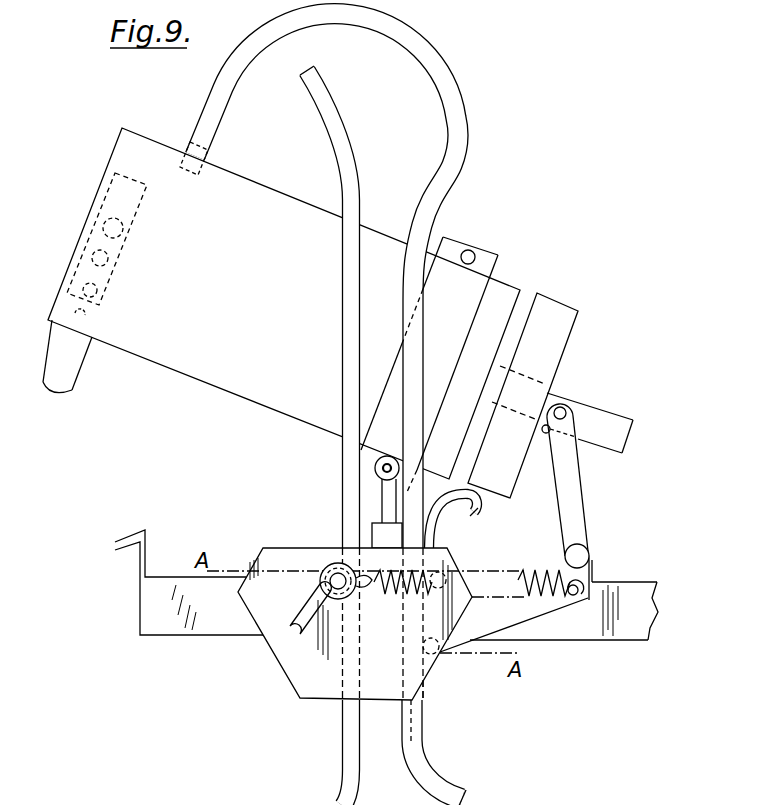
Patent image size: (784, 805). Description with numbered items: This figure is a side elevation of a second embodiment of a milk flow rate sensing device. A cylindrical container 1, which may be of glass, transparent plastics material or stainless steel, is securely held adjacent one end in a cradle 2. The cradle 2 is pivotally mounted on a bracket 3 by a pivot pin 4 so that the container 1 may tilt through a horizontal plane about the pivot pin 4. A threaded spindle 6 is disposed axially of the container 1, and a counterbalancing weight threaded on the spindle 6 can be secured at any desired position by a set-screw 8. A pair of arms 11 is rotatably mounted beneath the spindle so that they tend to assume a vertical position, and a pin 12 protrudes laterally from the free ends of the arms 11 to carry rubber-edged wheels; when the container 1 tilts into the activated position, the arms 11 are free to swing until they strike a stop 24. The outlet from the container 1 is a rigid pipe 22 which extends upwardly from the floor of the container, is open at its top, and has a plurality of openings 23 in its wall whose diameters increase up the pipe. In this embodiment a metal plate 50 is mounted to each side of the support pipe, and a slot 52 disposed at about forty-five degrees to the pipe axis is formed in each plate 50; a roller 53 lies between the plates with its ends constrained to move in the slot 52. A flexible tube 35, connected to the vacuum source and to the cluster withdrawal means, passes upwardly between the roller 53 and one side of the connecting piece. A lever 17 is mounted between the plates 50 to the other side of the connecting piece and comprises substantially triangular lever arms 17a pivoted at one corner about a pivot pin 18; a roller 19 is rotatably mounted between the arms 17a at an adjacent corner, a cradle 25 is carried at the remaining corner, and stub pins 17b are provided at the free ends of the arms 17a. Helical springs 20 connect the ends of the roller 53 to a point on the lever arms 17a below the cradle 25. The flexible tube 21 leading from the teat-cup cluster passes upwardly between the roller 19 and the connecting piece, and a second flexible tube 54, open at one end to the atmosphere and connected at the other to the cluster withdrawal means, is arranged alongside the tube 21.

The cylindrical container 1 is at (263, 188).
The cradle 2 is at (485, 252).
The bracket 3 is at (382, 501).
The pivot pin 4 is at (374, 468).
The threaded spindle 6 is at (603, 411).
The set-screw 8 is at (568, 308).
The arms 11 is at (577, 495).
The pin 12 is at (589, 553).
The lever 17 is at (590, 607).
The lever arms 17a is at (510, 612).
The stub pins 17b is at (596, 590).
The pivot pin 18 is at (452, 576).
The roller 19 is at (440, 658).
The helical springs 20 is at (540, 570).
The flexible tube 21 is at (206, 95).
The rigid pipe 22 is at (80, 357).
The openings 23 is at (124, 230).
The stop 24 is at (545, 436).
The cradle 25 is at (593, 573).
The flexible tube 35 is at (346, 130).
The metal plate 50 is at (288, 682).
The slot 52 is at (298, 630).
The roller 53 is at (328, 563).
The second flexible tube 54 is at (470, 512).